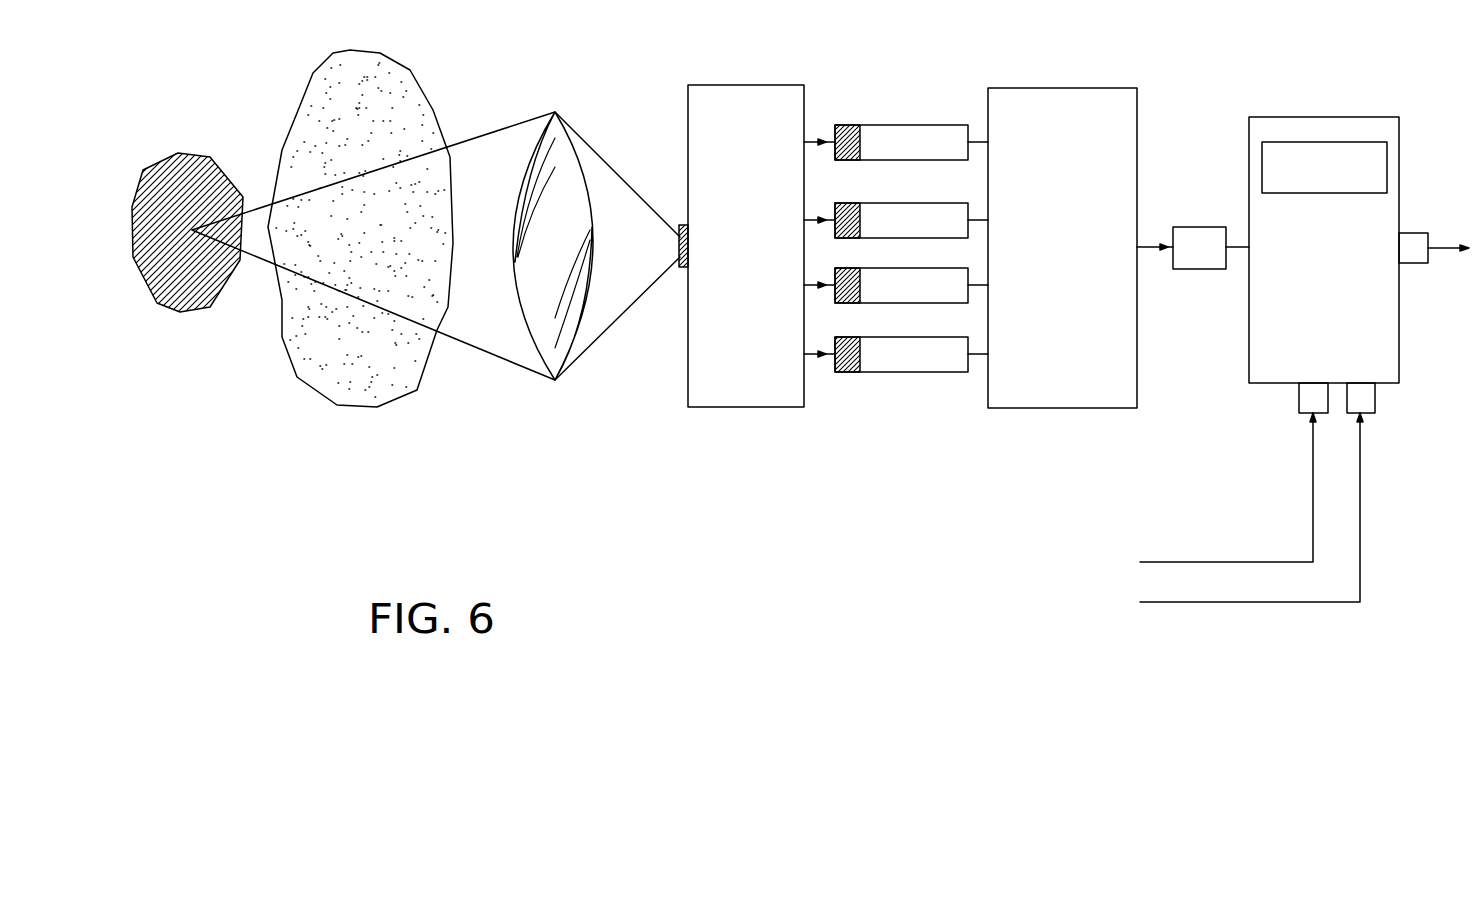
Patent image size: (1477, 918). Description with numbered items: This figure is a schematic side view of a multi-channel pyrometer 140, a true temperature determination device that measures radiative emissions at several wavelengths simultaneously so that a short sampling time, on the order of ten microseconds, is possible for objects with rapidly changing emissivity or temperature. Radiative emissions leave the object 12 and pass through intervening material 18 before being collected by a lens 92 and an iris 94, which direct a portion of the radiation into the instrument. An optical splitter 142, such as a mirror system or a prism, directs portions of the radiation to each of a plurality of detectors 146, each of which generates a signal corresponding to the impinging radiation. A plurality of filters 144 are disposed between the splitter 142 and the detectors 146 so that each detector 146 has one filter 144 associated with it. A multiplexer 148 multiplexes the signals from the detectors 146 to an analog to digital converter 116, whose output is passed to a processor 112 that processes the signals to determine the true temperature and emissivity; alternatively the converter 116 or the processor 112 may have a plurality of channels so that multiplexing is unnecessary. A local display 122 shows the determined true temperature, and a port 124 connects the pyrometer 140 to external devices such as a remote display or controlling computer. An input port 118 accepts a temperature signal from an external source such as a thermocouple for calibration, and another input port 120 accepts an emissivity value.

The object 12 is at (192, 152).
The intervening material 18 is at (362, 50).
The lens 92 is at (573, 148).
The iris 94 is at (680, 228).
The optical splitter 142 is at (750, 85).
The filters 144 is at (835, 203).
The detectors 146 is at (968, 203).
The multiplexer 148 is at (1067, 88).
The analog to digital converter 116 is at (1188, 270).
The processor 112 is at (1275, 116).
The local display 122 is at (1340, 142).
The port 124 is at (1412, 234).
The input port 118 is at (1299, 400).
The input port 120 is at (1375, 397).
The multi-channel pyrometer 140 is at (702, 537).